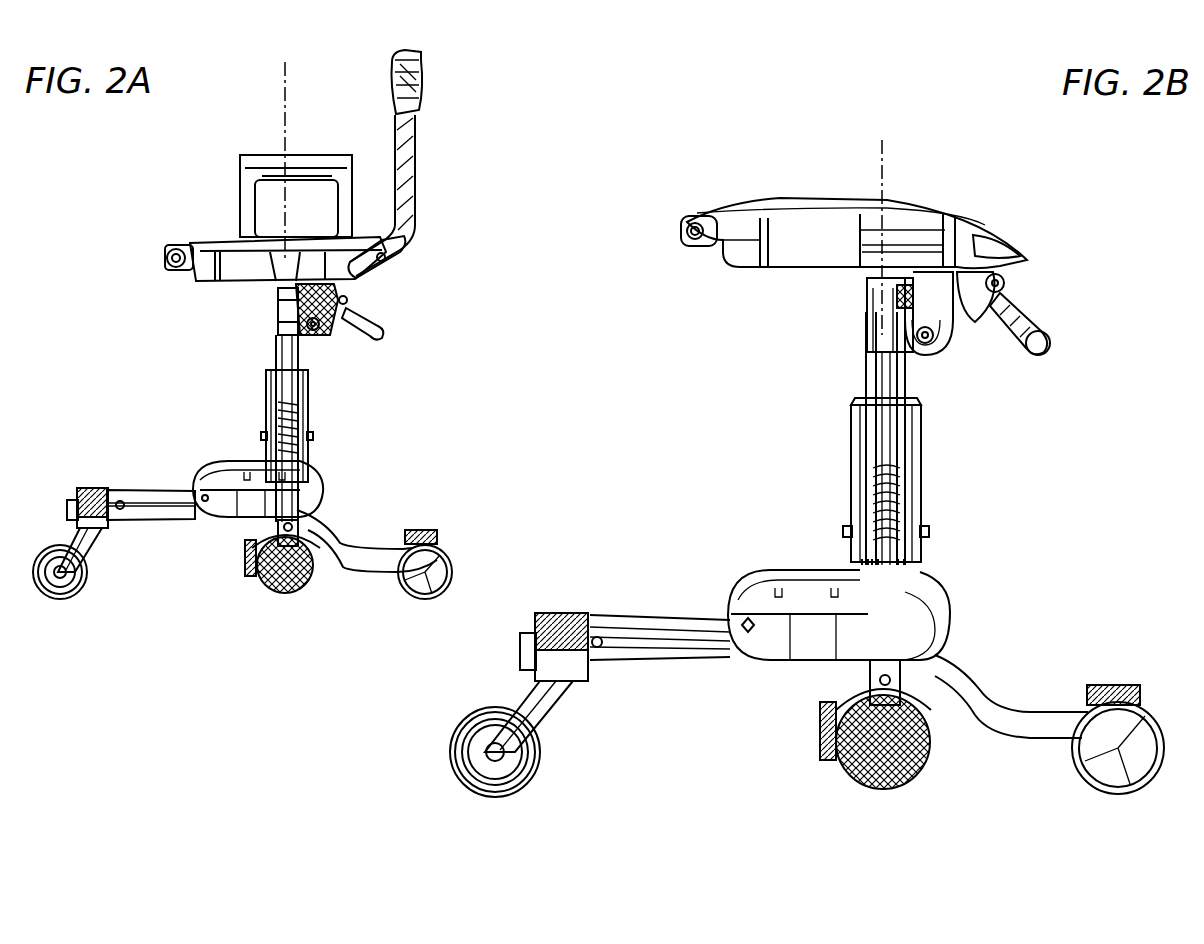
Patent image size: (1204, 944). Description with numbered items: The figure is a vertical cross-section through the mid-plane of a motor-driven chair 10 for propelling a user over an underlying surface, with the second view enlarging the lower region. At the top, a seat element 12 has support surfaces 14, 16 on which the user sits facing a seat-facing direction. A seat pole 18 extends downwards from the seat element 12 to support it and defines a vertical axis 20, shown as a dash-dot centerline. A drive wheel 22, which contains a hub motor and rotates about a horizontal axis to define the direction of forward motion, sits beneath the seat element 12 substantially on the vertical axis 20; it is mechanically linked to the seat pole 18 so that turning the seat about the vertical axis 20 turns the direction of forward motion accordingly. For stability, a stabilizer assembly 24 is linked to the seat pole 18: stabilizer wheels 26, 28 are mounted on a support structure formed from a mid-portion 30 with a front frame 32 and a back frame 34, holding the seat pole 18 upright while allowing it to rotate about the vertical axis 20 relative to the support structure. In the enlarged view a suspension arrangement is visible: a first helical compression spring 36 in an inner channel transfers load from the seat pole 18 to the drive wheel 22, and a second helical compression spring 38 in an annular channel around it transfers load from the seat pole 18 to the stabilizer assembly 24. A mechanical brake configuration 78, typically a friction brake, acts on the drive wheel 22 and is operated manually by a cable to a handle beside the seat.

In FIG. 2A, the motor-driven chair 10 is at (499, 133).
In FIG. 2B, the motor-driven chair 10 is at (1048, 194).
In FIG. 2A, the seat element 12 is at (436, 243).
In FIG. 2A, the support surface 14 is at (206, 240).
In FIG. 2A, the support surface 16 is at (419, 83).
In FIG. 2A, the seat pole 18 is at (300, 349).
In FIG. 2B, the seat pole 18 is at (888, 385).
In FIG. 2A, the vertical axis 20 is at (281, 82).
In FIG. 2B, the vertical axis 20 is at (876, 162).
In FIG. 2A, the drive wheel 22 is at (283, 596).
In FIG. 2B, the drive wheel 22 is at (868, 790).
In FIG. 2B, the stabilizer assembly 24 is at (1091, 621).
In FIG. 2A, the stabilizer wheel 26 is at (50, 598).
In FIG. 2B, the stabilizer wheel 26 is at (500, 798).
In FIG. 2A, the stabilizer wheel 28 is at (408, 600).
In FIG. 2B, the stabilizer wheel 28 is at (1080, 785).
In FIG. 2A, the mid-portion 30 is at (227, 465).
In FIG. 2B, the mid-portion 30 is at (775, 568).
In FIG. 2A, the front frame 32 is at (92, 492).
In FIG. 2B, the front frame 32 is at (620, 614).
In FIG. 2A, the back frame 34 is at (372, 546).
In FIG. 2B, the back frame 34 is at (965, 690).
In FIG. 2B, the first helical compression spring 36 is at (890, 510).
In FIG. 2B, the second helical compression spring 38 is at (905, 575).
In FIG. 2B, the mechanical brake configuration 78 is at (815, 718).